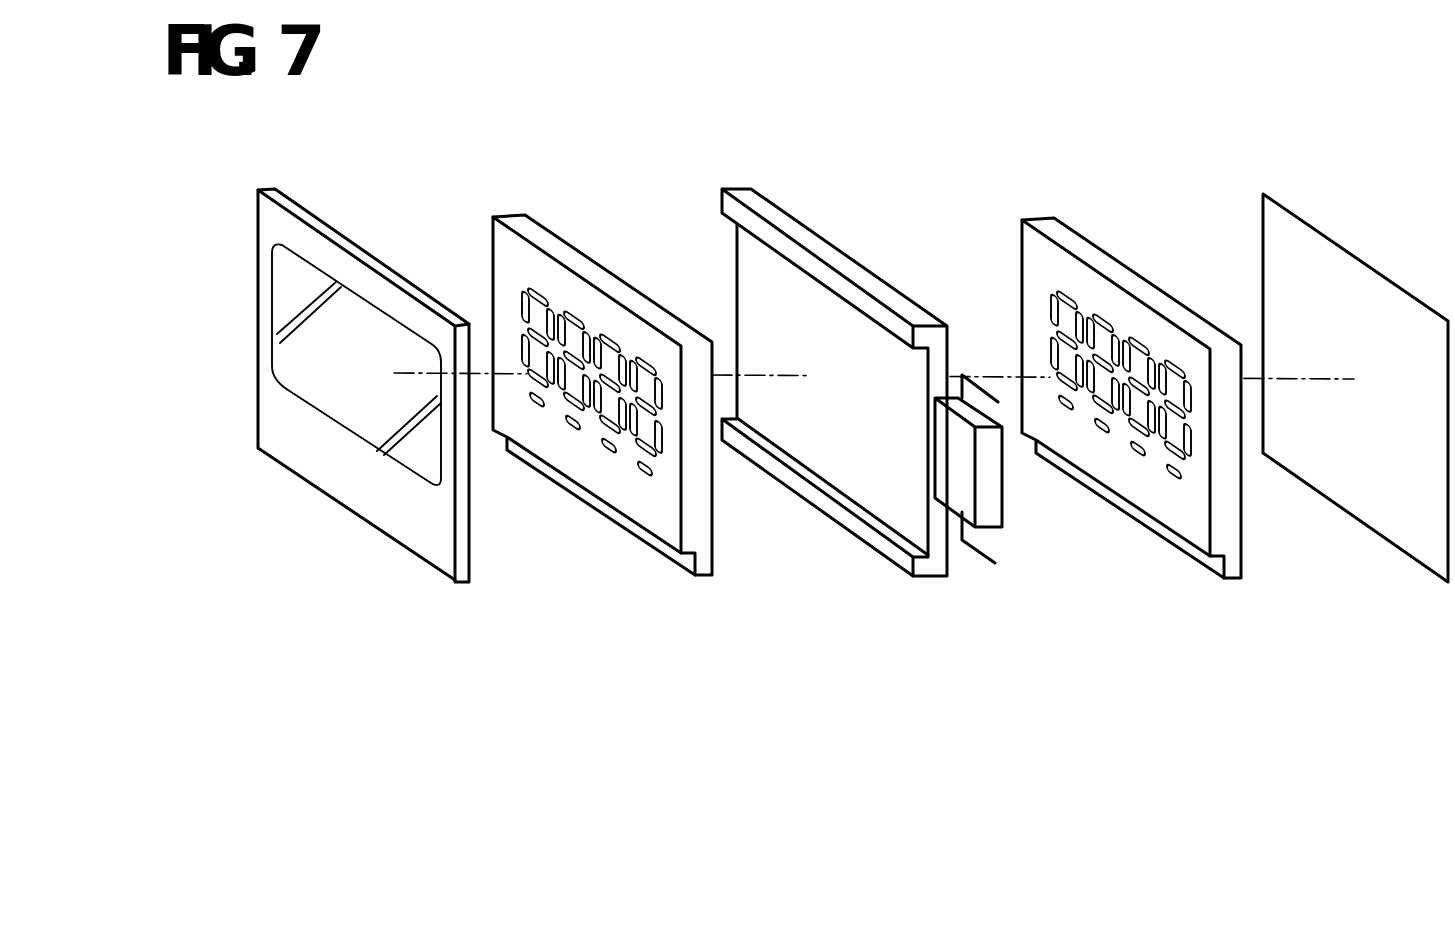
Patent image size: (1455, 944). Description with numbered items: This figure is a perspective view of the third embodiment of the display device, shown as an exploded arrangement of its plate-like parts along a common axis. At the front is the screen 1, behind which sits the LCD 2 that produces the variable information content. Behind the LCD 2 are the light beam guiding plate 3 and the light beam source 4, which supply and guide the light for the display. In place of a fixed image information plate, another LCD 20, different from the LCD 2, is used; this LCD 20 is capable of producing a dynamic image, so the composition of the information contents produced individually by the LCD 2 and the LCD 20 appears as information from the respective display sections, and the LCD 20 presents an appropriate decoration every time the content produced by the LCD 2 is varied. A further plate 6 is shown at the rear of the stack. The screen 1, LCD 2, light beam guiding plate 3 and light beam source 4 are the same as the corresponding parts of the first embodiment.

The screen 1 is at (341, 497).
The LCD 2 is at (603, 440).
The light beam guiding plate 3 is at (802, 500).
The light beam source 4 is at (1007, 505).
The LCD 20 is at (1189, 544).
The reflecting plate 6 is at (1347, 512).